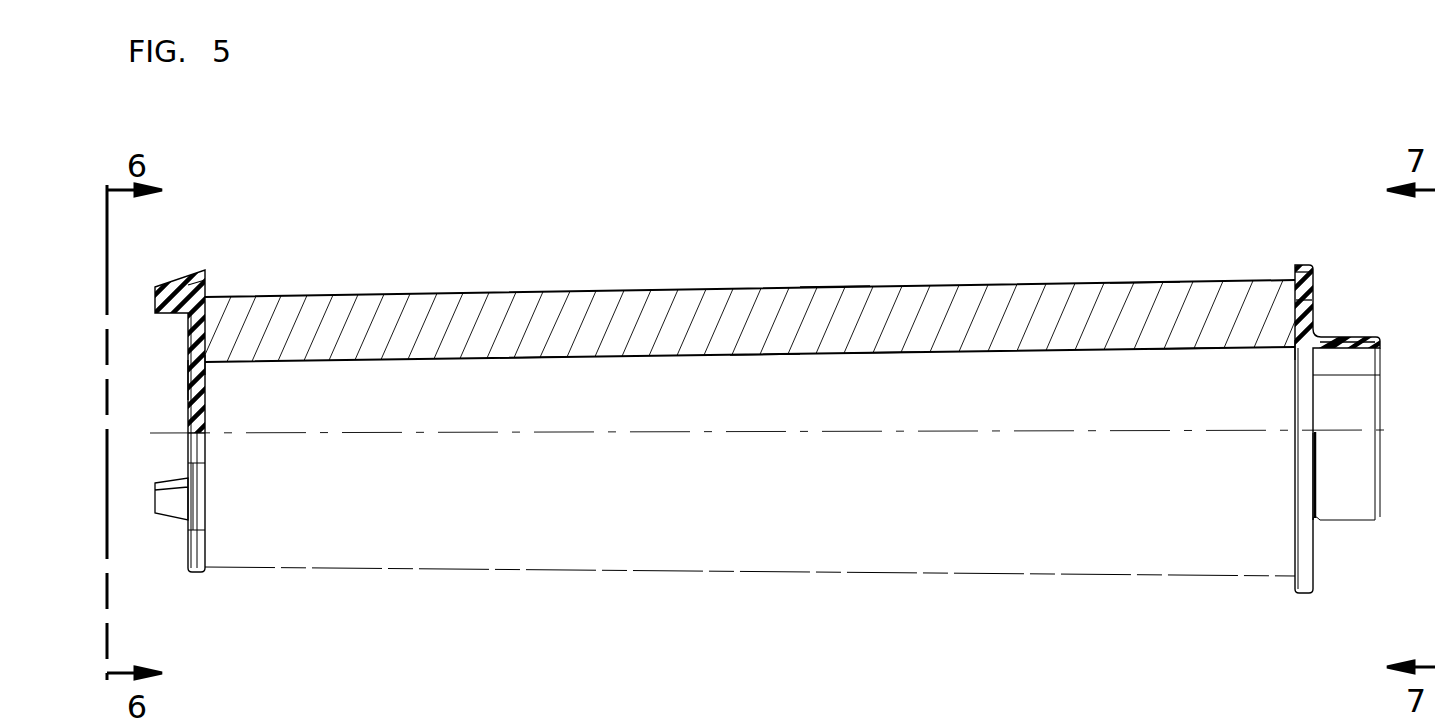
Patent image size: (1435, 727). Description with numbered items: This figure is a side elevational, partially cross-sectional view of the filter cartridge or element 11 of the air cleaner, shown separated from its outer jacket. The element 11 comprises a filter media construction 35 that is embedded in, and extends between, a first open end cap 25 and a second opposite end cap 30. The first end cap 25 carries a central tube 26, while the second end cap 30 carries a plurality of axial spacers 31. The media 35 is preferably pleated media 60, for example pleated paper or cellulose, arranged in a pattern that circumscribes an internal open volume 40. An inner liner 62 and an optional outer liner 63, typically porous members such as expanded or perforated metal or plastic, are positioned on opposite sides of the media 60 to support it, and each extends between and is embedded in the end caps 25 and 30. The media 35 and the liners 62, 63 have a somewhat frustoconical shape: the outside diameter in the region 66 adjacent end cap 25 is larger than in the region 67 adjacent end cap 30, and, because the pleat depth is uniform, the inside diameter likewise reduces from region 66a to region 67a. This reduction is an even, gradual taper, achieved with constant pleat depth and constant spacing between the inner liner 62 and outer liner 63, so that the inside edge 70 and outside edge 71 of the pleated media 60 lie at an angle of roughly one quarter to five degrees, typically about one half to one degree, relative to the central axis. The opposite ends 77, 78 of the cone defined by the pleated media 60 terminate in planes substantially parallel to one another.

The element 11 is at (953, 230).
The first open end cap 25 is at (1302, 295).
The central tube 26 is at (1358, 340).
The second end cap 30 is at (190, 378).
The axial spacers 31 is at (161, 285).
The filter media construction 35 is at (531, 340).
The internal open volume 40 is at (885, 351).
The pleated media 60 is at (637, 314).
The inner liner 62 is at (1179, 350).
The outer liner 63 is at (1140, 282).
The region adjacent end cap 25 (outside diameter) 66 is at (1295, 278).
The region adjacent end cap 25 (inside diameter) 66a is at (1300, 350).
The region adjacent end cap 30 (outside diameter) 67 is at (215, 298).
The region adjacent end cap 30 (inside diameter) 67a is at (207, 363).
The inside edge 70 is at (762, 353).
The outside edge 71 is at (832, 285).
The end of cone configuration 77 is at (1312, 275).
The end of cone configuration 78 is at (191, 288).